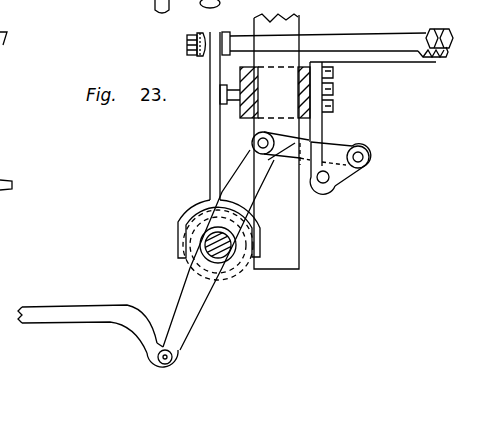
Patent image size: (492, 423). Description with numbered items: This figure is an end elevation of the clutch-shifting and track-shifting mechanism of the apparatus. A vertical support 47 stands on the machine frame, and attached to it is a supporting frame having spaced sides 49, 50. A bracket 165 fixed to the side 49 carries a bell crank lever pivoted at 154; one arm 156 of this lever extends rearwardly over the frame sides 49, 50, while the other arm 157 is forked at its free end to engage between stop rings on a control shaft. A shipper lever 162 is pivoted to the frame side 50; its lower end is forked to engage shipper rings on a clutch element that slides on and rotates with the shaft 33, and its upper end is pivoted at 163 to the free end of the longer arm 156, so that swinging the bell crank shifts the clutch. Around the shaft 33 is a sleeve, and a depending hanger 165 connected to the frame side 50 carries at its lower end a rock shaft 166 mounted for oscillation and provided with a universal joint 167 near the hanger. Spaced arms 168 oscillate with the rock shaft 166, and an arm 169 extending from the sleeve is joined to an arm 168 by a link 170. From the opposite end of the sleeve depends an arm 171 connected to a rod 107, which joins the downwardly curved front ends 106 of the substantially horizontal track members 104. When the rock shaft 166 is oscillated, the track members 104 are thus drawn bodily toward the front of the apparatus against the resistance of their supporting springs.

The shaft 33 is at (222, 255).
The vertical support 47 is at (298, 223).
The side of supporting frame 49 is at (333, 98).
The side of supporting frame 50 is at (242, 78).
The horizontal portion of lower track member 104 is at (78, 313).
The downwardly curved portion 106 is at (150, 335).
The rod 107 is at (173, 358).
The pivot 154 is at (441, 27).
The arm of bell crank lever 156 is at (374, 40).
The arm of bell crank lever 157 is at (438, 62).
The shipper lever 162 is at (212, 125).
The pivot 163 is at (188, 48).
The hanger 165 is at (323, 125).
The rock shaft 166 is at (328, 185).
The universal joint 167 is at (200, 233).
The arm 168 is at (346, 176).
The arm 169 is at (240, 178).
The link 170 is at (257, 163).
The arm 171 is at (183, 292).